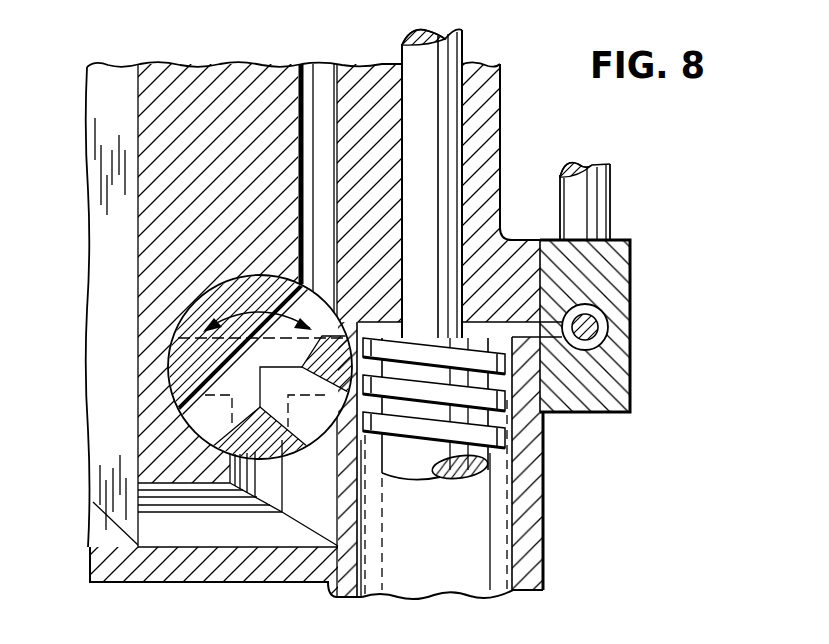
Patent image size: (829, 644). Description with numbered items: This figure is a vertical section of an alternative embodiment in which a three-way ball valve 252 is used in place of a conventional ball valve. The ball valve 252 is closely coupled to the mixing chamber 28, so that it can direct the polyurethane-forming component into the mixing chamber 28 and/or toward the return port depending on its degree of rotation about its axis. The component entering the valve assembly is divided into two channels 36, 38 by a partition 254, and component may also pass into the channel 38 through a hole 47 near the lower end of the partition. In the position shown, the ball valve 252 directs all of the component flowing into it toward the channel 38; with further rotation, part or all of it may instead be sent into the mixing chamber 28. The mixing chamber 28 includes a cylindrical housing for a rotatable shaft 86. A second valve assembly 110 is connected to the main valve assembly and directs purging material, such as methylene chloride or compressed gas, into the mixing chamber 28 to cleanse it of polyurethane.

The channel 36 is at (108, 198).
The channel 38 is at (318, 104).
The three-way ball valve 252 is at (167, 345).
The partition 254 is at (148, 462).
The hole 47 is at (180, 532).
The mixing chamber 28 is at (472, 545).
The rotatable shaft 86 is at (472, 443).
The valve assembly 110 is at (640, 364).